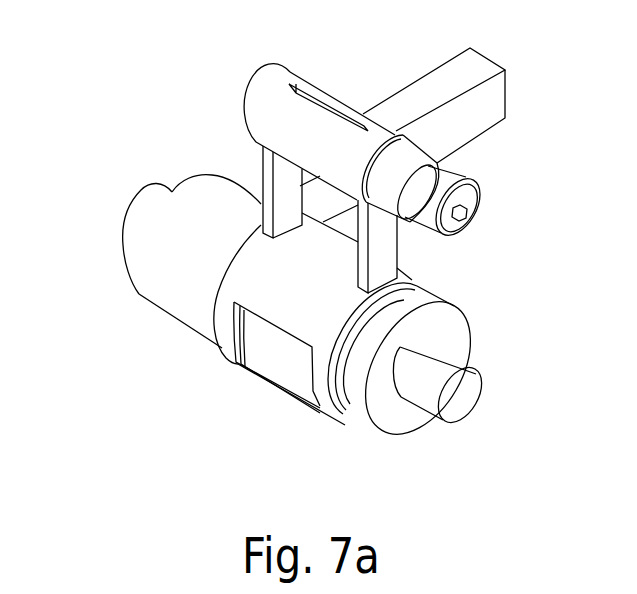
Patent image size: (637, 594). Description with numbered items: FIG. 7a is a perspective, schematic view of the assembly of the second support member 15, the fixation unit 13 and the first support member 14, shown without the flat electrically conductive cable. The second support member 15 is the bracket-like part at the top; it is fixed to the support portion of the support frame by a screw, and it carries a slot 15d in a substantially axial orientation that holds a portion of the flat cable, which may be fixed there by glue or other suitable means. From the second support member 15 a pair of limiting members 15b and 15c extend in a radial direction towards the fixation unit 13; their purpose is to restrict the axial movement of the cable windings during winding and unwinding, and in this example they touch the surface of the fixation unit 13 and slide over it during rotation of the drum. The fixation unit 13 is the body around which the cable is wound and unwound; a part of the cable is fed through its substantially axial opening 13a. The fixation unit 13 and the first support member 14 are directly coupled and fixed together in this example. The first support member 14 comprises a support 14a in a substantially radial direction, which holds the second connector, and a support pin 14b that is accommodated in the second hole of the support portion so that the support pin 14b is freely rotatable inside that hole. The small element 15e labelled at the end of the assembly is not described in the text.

The fixation unit 13 is at (230, 368).
The axial opening 13a is at (278, 358).
The first support member 14 is at (140, 295).
The support 14a is at (465, 143).
The support pin 14b is at (475, 418).
The second support member 15 is at (262, 88).
The limiting member 15b is at (400, 235).
The limiting member 15c is at (257, 168).
The slot 15d is at (335, 103).
The clamp screw 15e is at (473, 223).